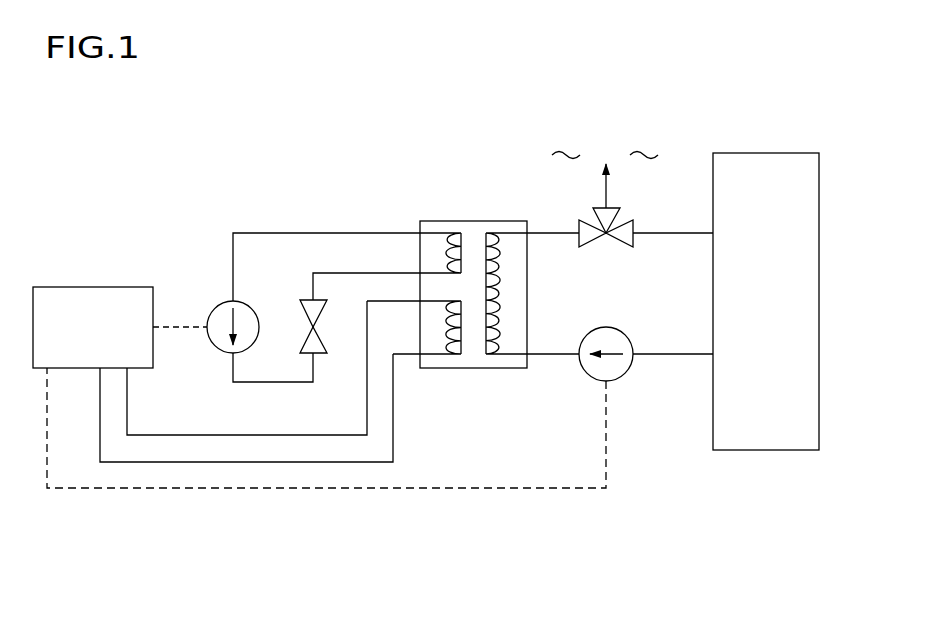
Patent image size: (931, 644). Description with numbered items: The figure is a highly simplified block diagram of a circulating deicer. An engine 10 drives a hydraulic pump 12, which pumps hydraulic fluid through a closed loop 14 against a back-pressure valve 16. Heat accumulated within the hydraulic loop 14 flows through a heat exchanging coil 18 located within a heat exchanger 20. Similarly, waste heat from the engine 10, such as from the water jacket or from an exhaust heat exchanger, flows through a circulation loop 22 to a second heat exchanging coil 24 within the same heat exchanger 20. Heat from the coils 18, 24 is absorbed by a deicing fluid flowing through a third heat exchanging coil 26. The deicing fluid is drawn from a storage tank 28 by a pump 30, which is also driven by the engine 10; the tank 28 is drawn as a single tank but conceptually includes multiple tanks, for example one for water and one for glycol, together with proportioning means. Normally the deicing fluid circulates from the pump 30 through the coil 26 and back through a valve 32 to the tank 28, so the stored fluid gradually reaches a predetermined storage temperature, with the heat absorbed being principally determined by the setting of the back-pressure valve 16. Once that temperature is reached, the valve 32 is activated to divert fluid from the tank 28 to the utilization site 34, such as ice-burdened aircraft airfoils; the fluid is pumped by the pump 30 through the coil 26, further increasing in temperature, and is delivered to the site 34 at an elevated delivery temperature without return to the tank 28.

The engine 10 is at (93, 274).
The hydraulic pump 12 is at (200, 294).
The closed loop 14 is at (321, 326).
The back-pressure valve 16 is at (289, 301).
The heat exchanging coil 18 is at (421, 227).
The heat exchanger 20 is at (467, 261).
The circulation loop 22 is at (247, 368).
The heat exchanging coil 24 is at (441, 359).
The heat exchanging coil 26 is at (520, 267).
The storage tank 28 is at (734, 340).
The pump 30 is at (621, 328).
The valve 32 is at (587, 245).
The utilization site 34 is at (605, 175).